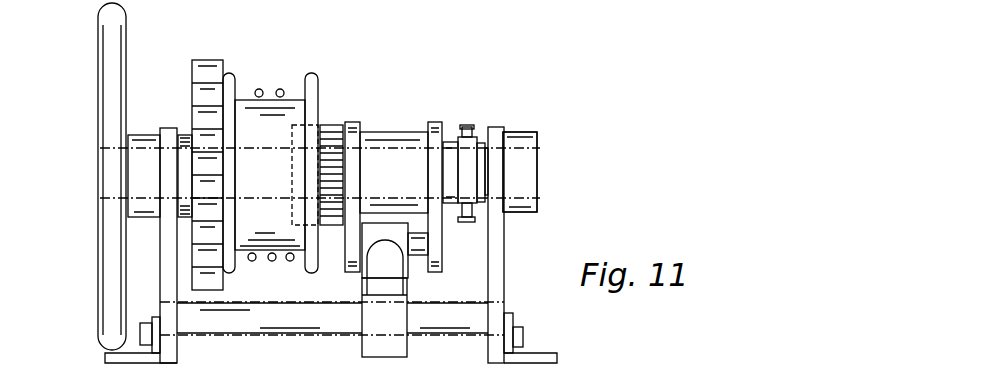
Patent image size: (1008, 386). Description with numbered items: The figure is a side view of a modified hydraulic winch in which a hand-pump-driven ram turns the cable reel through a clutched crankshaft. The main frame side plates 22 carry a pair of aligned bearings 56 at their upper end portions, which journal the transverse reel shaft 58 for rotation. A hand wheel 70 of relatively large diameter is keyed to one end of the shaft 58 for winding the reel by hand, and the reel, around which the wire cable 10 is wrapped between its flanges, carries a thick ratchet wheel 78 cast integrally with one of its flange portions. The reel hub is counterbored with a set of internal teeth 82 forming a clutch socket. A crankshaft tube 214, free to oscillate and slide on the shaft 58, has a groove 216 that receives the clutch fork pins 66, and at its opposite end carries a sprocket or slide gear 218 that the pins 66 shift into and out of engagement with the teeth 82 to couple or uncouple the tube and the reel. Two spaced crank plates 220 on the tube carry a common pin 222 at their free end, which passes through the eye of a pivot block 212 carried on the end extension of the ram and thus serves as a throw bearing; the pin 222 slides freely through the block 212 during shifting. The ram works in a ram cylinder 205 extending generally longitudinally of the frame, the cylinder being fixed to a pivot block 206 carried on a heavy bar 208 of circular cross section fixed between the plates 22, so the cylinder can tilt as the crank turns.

The wire cable 10 is at (286, 264).
The side plates 22 is at (160, 278).
The bearings 56 is at (141, 134).
The transverse shaft 58 is at (520, 152).
The clutch fork pins 66 is at (473, 127).
The hand wheel 70 is at (99, 50).
The ratchet wheel 78 is at (192, 65).
The internal teeth 82 is at (292, 218).
The ram cylinder 205 is at (356, 275).
The pivot block 206 is at (410, 354).
The heavy bar 208 is at (323, 337).
The pivot block 212 is at (397, 222).
The crankshaft tube 214 is at (435, 121).
The groove 216 is at (450, 141).
The slide gear 218 is at (331, 125).
The crank plates 220 is at (363, 131).
The pin 222 is at (414, 256).